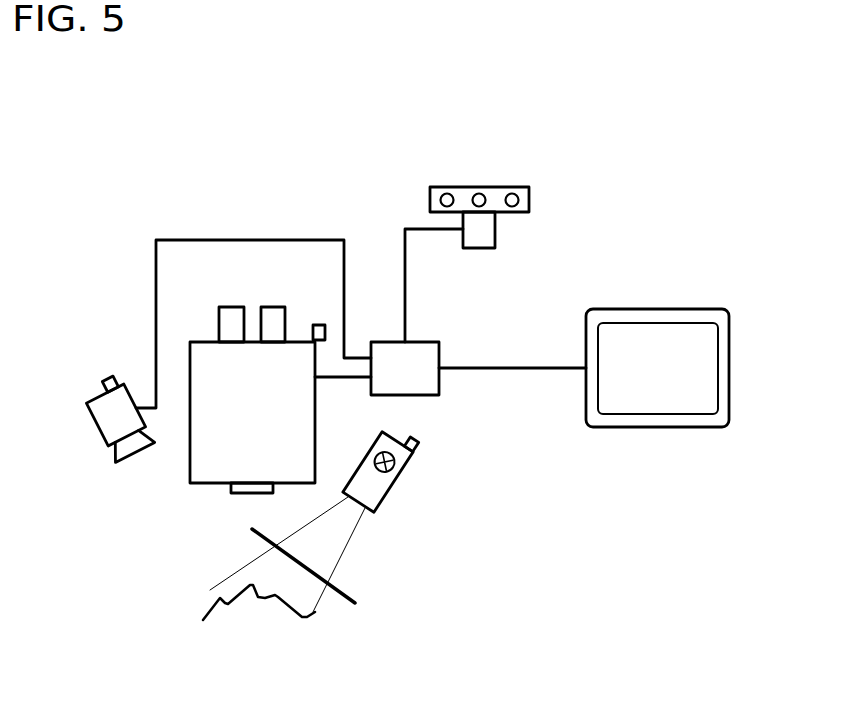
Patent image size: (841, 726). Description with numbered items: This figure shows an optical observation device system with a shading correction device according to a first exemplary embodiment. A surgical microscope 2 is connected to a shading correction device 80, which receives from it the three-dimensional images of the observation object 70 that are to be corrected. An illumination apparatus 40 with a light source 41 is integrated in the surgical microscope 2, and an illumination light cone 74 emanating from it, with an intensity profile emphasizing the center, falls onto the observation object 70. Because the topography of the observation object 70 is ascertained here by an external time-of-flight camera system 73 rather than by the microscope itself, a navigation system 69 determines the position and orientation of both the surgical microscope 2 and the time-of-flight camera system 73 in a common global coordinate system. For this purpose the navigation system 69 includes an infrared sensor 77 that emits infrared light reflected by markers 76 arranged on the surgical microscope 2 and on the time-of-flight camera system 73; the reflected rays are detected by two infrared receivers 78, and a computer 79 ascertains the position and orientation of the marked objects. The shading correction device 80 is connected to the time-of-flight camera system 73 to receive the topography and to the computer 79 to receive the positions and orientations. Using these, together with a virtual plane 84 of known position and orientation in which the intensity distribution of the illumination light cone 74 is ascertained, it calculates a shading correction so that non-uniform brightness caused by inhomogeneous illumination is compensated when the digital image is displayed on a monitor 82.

The surgical microscope 2 is at (202, 234).
The navigation system 69 is at (484, 178).
The infrared sensor 77 is at (480, 187).
The infrared receivers 78 is at (445, 187).
The computer 79 is at (498, 230).
The shading correction device 80 is at (420, 341).
The monitor 82 is at (659, 308).
The time-of-flight camera system 73 is at (98, 426).
The markers 76 is at (322, 325).
The illumination apparatus 40 is at (419, 467).
The light source 41 is at (381, 452).
The illumination light cone 74 is at (332, 545).
The virtual plane 84 is at (261, 542).
The observation object 70 is at (208, 609).